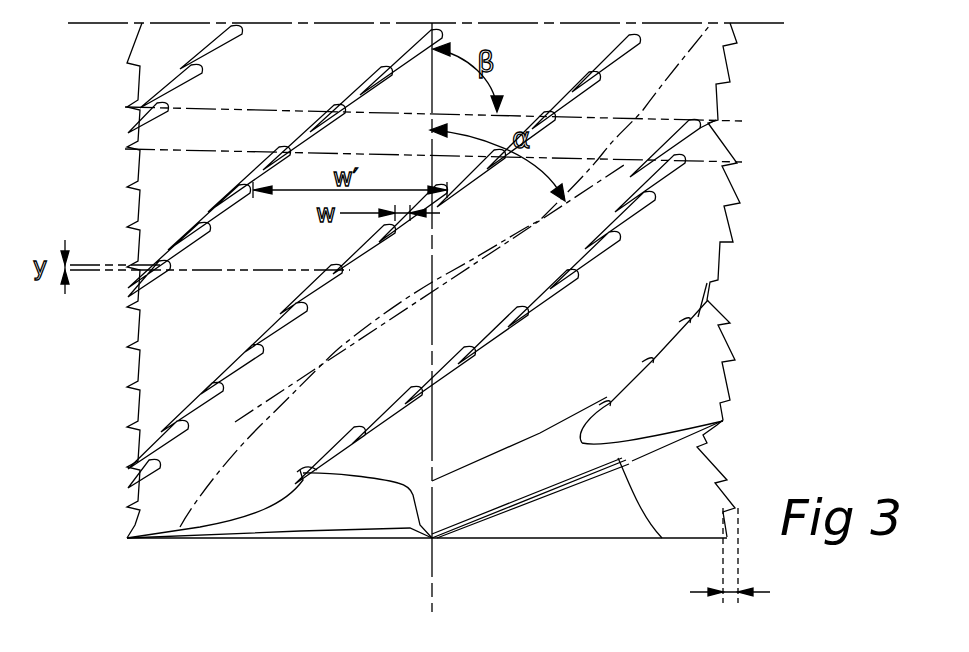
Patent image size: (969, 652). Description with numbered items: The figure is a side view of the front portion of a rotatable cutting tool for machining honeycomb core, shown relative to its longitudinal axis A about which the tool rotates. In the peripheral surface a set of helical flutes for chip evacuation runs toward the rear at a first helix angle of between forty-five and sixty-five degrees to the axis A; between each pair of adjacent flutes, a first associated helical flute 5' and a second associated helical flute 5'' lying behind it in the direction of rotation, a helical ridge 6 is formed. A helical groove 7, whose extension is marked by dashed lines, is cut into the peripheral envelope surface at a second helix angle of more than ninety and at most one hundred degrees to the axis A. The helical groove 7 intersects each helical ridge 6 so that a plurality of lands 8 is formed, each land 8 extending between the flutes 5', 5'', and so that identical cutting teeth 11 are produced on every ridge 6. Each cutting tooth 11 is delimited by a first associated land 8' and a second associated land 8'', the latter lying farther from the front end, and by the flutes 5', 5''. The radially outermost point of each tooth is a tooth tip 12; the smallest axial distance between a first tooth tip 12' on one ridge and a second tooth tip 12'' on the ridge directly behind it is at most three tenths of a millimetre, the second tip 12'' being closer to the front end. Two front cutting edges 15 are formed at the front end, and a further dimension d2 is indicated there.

The first associated helical flute 5' is at (137, 477).
The second associated helical flute 5'' is at (279, 526).
The helical ridge 6 is at (327, 450).
The helical groove 7 is at (242, 128).
The land 8 is at (505, 301).
The first associated land 8' is at (354, 401).
The second associated land 8'' is at (461, 325).
The cutting tooth 11 is at (745, 183).
The tooth tip 12 is at (761, 280).
The first tooth tip 12' is at (285, 163).
The second tooth tip 12'' is at (384, 261).
The front cutting edge 15 is at (242, 540).
The longitudinal axis A is at (432, 570).
The crest offset d2 is at (730, 593).